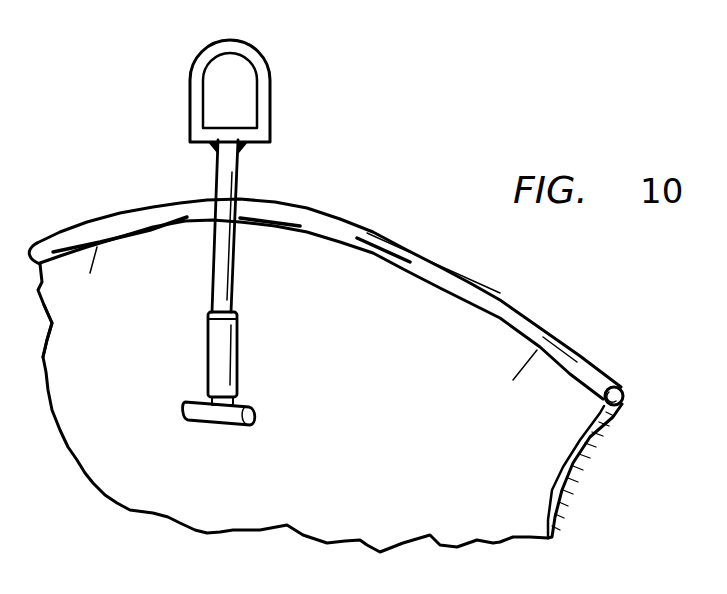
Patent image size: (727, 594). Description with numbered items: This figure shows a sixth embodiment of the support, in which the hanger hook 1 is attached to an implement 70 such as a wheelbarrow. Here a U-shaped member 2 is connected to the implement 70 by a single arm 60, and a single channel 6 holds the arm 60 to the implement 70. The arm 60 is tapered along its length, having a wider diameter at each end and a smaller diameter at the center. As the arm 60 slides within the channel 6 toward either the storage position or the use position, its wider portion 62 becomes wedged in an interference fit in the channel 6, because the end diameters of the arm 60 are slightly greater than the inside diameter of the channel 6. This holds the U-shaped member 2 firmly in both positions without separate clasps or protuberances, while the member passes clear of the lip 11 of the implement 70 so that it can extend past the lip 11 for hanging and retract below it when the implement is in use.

The hanger hook 1 is at (130, 457).
The U-shaped member 2 is at (271, 52).
The channel 6 is at (243, 357).
The lip 11 is at (597, 366).
The arm 60 is at (313, 233).
The wider portion 62 is at (243, 146).
The implement 70 is at (330, 408).